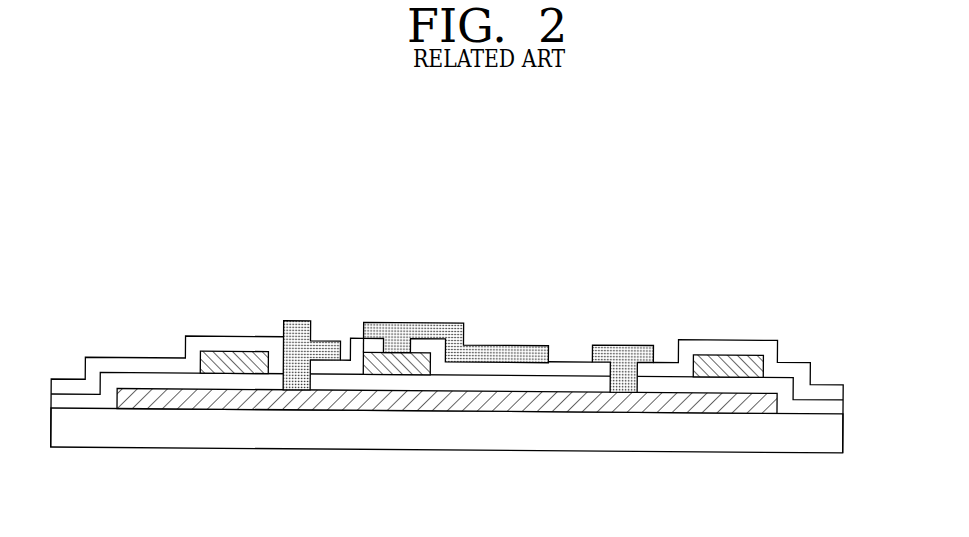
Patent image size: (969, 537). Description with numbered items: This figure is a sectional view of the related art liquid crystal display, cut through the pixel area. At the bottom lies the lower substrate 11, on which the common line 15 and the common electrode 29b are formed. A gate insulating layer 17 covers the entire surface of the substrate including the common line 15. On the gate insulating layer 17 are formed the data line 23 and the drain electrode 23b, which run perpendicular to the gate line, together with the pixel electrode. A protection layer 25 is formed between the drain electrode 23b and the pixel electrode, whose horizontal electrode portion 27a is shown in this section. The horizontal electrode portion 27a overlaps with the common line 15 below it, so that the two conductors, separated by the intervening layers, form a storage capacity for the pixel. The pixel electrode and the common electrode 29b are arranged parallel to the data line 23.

The lower substrate 11 is at (845, 440).
The common line 15 is at (512, 412).
The gate insulating layer 17 is at (845, 410).
The data line 23 is at (231, 350).
The drain electrode 23b is at (397, 360).
The protection layer 25 is at (845, 387).
The horizontal electrode portion 27a is at (497, 345).
The common electrode 29b is at (295, 330).